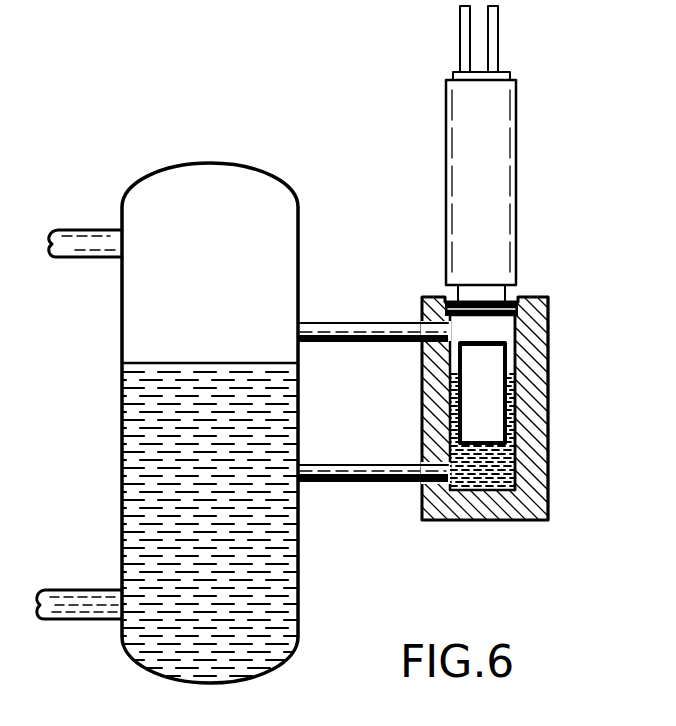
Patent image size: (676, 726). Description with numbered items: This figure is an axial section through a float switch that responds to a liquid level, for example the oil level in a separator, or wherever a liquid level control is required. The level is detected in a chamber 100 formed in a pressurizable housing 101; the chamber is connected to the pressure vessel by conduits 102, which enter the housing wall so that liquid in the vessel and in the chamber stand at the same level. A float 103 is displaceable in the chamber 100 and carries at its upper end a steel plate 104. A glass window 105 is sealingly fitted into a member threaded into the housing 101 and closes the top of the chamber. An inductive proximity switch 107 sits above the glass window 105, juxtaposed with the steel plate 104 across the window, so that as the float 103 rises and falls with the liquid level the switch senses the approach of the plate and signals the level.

The chamber 100 is at (495, 330).
The pressurizable housing 101 is at (530, 387).
The connecting pipes 102 is at (355, 323).
The float 103 is at (488, 422).
The steel plate 104 is at (482, 345).
The glass window 105 is at (518, 297).
The inductive proximity switch 107 is at (517, 161).